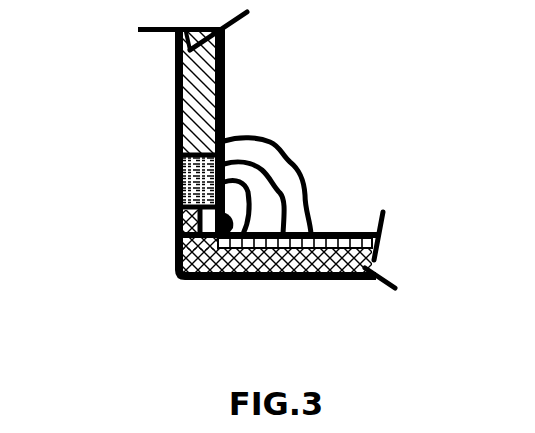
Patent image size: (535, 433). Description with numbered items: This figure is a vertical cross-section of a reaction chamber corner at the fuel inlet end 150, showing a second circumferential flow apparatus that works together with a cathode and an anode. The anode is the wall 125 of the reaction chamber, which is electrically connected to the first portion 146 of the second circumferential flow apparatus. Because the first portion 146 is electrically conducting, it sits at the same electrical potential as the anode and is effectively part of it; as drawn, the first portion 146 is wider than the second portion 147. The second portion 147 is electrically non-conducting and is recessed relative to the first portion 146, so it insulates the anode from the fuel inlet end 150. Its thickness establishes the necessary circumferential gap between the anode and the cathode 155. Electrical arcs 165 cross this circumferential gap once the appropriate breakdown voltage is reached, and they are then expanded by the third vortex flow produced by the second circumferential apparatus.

The wall of the reaction chamber 125 is at (177, 90).
The first portion 146 is at (176, 182).
The second portion 147 is at (174, 215).
The electrical arcs 165 is at (303, 173).
The cathode 155 is at (350, 233).
The fuel inlet end 150 is at (303, 282).